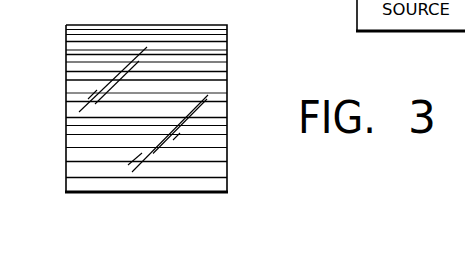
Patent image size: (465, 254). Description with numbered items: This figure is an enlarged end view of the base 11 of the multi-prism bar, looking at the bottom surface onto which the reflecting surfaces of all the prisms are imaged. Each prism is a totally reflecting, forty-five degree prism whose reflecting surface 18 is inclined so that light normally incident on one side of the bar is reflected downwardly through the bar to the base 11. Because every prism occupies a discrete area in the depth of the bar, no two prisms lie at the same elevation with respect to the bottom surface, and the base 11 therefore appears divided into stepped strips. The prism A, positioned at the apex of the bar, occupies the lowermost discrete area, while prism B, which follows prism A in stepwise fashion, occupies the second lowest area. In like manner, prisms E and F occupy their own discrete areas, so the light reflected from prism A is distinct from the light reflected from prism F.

The base 11 is at (172, 170).
The reflecting surface 18 is at (107, 56).
The prism A is at (91, 188).
The prism E is at (75, 125).
The prism F is at (222, 109).
The prism B is at (219, 173).